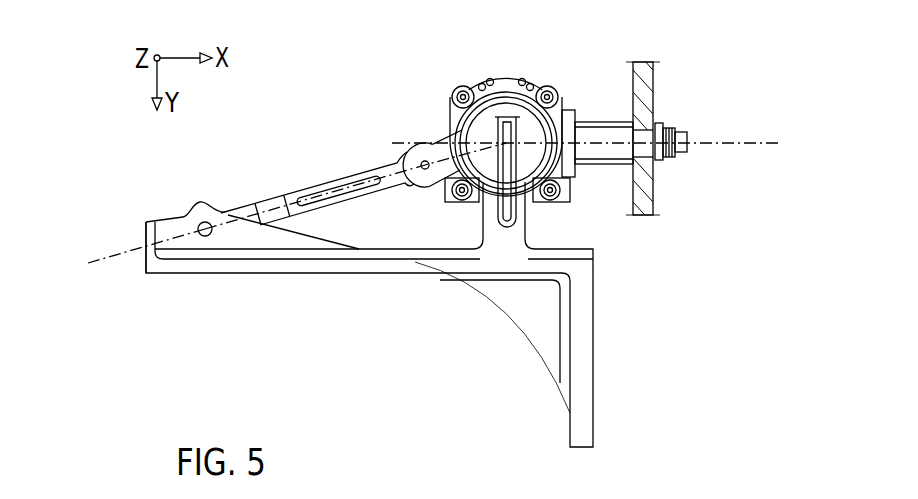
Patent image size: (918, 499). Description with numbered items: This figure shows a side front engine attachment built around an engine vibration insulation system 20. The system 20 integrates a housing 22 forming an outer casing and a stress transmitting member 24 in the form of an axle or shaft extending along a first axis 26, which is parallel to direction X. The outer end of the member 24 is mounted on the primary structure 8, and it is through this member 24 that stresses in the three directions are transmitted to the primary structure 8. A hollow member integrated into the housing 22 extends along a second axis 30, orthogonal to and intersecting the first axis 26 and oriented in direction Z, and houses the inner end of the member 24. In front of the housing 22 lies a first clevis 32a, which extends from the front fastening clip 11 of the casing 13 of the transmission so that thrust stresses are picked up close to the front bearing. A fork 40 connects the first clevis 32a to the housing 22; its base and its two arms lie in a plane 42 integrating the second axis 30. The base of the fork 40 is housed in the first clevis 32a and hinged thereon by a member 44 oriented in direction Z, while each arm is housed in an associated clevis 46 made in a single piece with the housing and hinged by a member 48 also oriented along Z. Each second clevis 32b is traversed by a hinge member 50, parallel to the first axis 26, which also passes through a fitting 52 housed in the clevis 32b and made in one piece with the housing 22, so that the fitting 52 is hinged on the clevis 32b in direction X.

The primary structure 8 is at (662, 73).
The front fastening clip 11 is at (146, 235).
The casing 13 is at (277, 267).
The engine vibration insulation system 20 is at (443, 106).
The housing 22 is at (527, 127).
The stress transmitting member 24 is at (594, 140).
The first axis 26 is at (765, 140).
The second axis 30 is at (498, 138).
The first clevis 32a is at (228, 242).
The second clevis 32b is at (495, 237).
The fork 40 is at (292, 190).
The plane 42 is at (115, 258).
The hinge member 44 is at (204, 238).
The clevis 46 is at (425, 143).
The hinge member 48 is at (425, 170).
The hinge member 50 is at (496, 210).
The fitting 52 is at (512, 212).